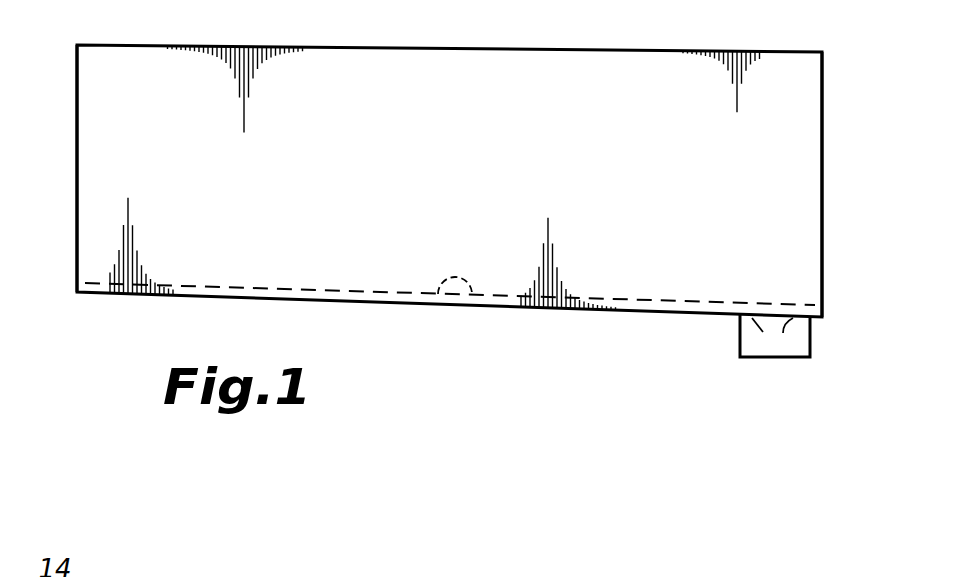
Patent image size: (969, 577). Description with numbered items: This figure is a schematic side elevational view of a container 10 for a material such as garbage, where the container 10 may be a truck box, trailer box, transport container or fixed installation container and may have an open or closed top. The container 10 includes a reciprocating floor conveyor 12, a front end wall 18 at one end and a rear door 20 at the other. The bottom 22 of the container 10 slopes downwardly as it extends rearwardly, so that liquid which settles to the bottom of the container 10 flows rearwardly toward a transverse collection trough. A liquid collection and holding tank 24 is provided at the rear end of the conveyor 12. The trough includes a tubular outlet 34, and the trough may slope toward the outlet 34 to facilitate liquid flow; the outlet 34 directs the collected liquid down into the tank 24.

The container 10 is at (342, 170).
The reciprocating floor conveyor 12 is at (465, 306).
The front end wall 18 is at (77, 206).
The rear door 20 is at (822, 165).
The bottom 22 is at (262, 301).
The liquid collection and holding tank 24 is at (740, 338).
The tubular outlet 34 is at (797, 358).